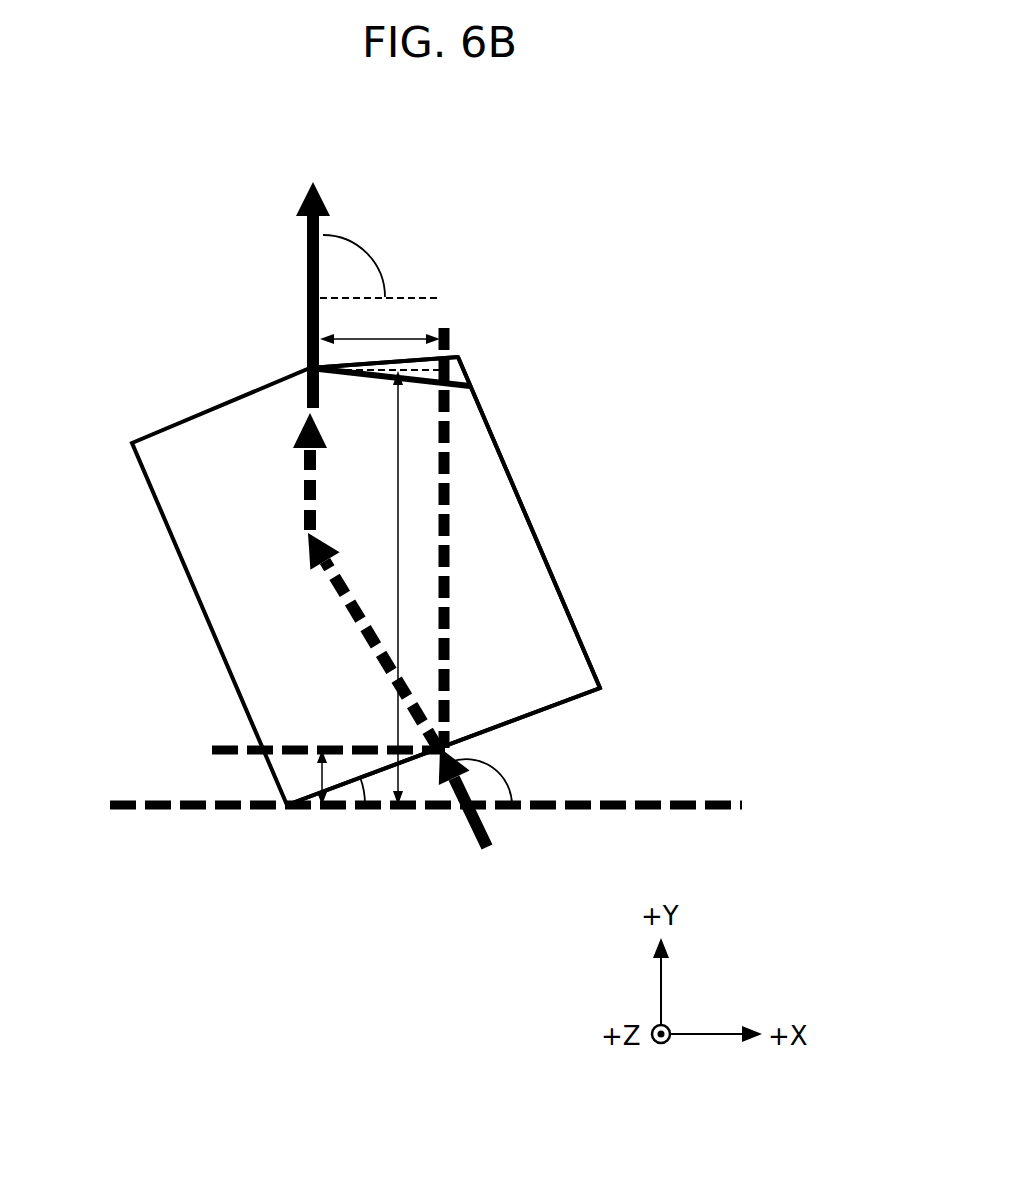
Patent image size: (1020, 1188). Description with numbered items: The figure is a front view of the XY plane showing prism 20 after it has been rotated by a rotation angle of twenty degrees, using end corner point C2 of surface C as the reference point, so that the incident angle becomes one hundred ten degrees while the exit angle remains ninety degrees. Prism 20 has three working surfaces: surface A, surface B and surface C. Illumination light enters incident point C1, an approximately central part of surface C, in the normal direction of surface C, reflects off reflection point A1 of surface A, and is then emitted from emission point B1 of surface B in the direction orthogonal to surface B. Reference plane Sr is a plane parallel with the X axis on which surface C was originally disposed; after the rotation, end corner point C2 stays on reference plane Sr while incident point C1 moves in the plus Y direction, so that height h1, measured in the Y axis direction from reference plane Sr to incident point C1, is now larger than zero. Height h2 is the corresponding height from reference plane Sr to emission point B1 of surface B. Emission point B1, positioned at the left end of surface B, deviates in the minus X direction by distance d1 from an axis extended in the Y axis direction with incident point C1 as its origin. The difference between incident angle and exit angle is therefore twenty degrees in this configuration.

The prism 20 is at (144, 206).
The surface A is at (475, 447).
The surface B is at (455, 373).
The surface C is at (550, 702).
The reference plane Sr is at (727, 800).
The incident point C1 is at (437, 752).
The end corner point C2 is at (288, 808).
The reflection point A1 is at (306, 532).
The emission point B1 is at (308, 368).
The distance d1 is at (372, 340).
The height of emission point h2 is at (399, 480).
The height of incident point h1 is at (320, 778).